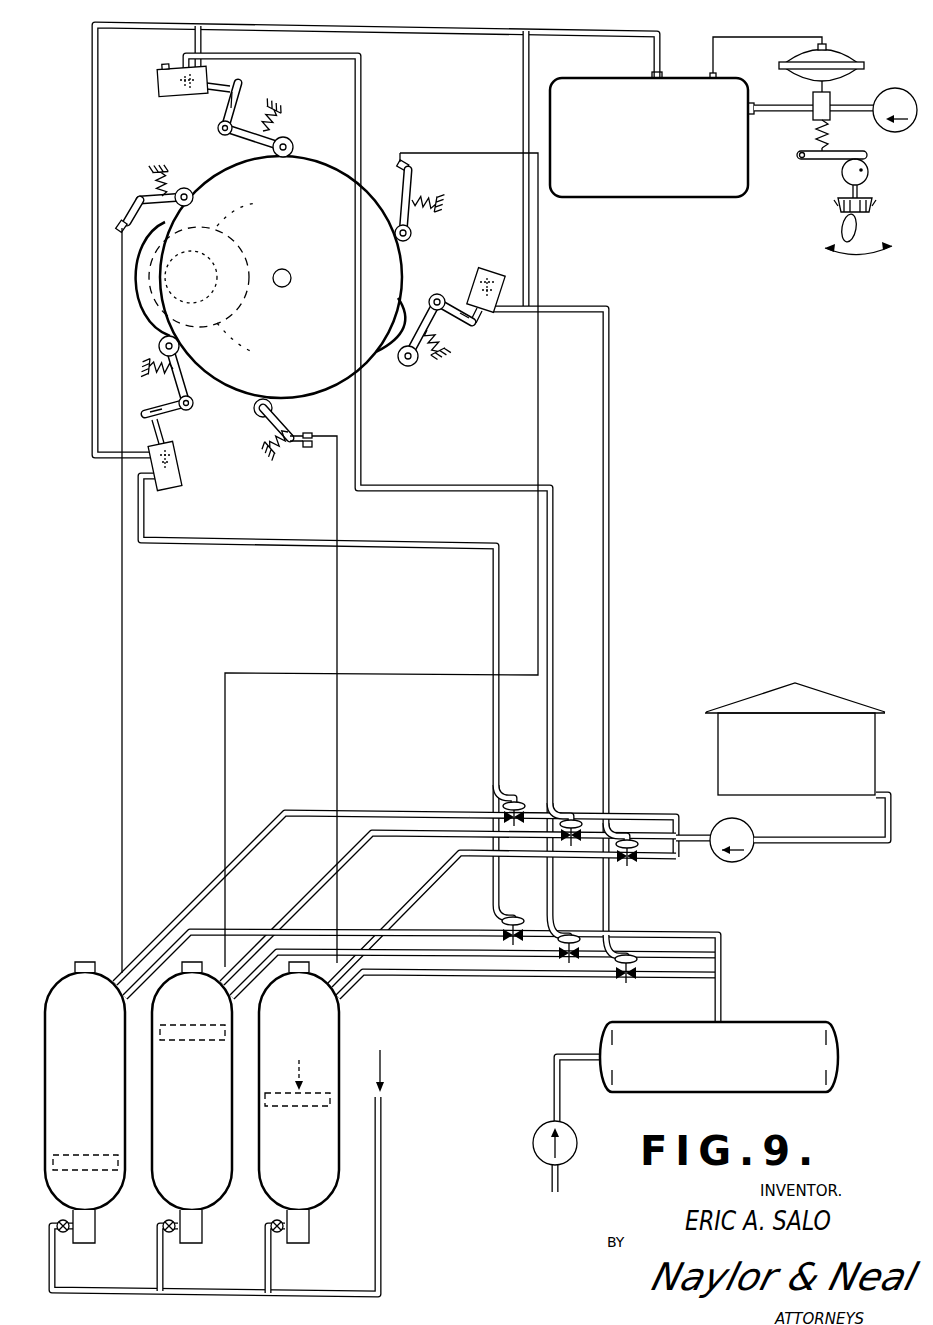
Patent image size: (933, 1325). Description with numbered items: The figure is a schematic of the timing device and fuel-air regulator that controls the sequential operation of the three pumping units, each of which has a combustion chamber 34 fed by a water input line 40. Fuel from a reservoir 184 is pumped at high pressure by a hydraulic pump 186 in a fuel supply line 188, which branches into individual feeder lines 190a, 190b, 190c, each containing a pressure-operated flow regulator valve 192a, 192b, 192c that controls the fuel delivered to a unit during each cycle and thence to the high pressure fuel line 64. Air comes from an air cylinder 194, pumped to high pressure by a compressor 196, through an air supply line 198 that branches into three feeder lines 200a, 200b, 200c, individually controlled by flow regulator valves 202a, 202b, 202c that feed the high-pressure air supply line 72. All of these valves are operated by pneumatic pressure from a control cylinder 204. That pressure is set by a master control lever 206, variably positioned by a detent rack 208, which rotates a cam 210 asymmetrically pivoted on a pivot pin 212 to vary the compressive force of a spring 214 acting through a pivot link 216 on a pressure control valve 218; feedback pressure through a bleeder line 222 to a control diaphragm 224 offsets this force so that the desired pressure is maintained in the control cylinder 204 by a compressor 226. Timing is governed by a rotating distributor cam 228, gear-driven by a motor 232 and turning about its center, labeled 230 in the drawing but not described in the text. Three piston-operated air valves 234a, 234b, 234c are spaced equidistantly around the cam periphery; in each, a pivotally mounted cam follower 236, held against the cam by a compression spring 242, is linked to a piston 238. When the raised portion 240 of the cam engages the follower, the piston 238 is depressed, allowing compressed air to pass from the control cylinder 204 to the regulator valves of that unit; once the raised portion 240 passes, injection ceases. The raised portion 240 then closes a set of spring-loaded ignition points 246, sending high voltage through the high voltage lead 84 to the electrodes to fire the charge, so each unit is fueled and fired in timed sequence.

The combustion chamber 34 is at (98, 1062).
The water input line 40 is at (382, 1250).
The high pressure fuel line 64 is at (252, 845).
The high-pressure air supply line 72 is at (390, 940).
The high voltage lead 84 is at (337, 517).
The reservoir 184 is at (713, 715).
The hydraulic pump 186 is at (738, 860).
The fuel supply line 188 is at (852, 843).
The feeder line 190a is at (652, 815).
The feeder line 190b is at (655, 834).
The feeder line 190c is at (658, 855).
The pressure-operated flow regulator valve 192a is at (518, 796).
The pressure-operated flow regulator valve 192b is at (577, 812).
The pressure-operated flow regulator valve 192c is at (633, 832).
The air cylinder 194 is at (820, 1021).
The compressor 196 is at (537, 1125).
The air supply line 198 is at (724, 1000).
The feeder line 200a is at (660, 933).
The feeder line 200b is at (697, 952).
The feeder line 200c is at (654, 978).
The flow regulator valve 202a is at (516, 916).
The flow regulator valve 202b is at (573, 933).
The flow regulator valve 202c is at (630, 952).
The control cylinder 204 is at (641, 198).
The master control lever 206 is at (843, 190).
The detent rack 208 is at (872, 210).
The cam 210 is at (843, 172).
The pivot pin 212 is at (868, 174).
The spring 214 is at (812, 128).
The pivot link 216 is at (866, 146).
The pressure control valve 218 is at (832, 98).
The bleeder line 222 is at (740, 37).
The control diaphragm 224 is at (840, 55).
The compressor 226 is at (903, 88).
The distributor cam 228 is at (320, 172).
The shaft 230 is at (288, 270).
The motor 232 is at (183, 214).
The piston-operated air valve 234a is at (185, 474).
The piston-operated air valve 234b is at (173, 96).
The piston-operated air valve 234c is at (487, 318).
The cam follower 236 is at (430, 300).
The piston 238 is at (478, 270).
The raised portion 240 is at (365, 398).
The compression spring 242 is at (415, 368).
The spring-loaded ignition points 246 is at (303, 452).